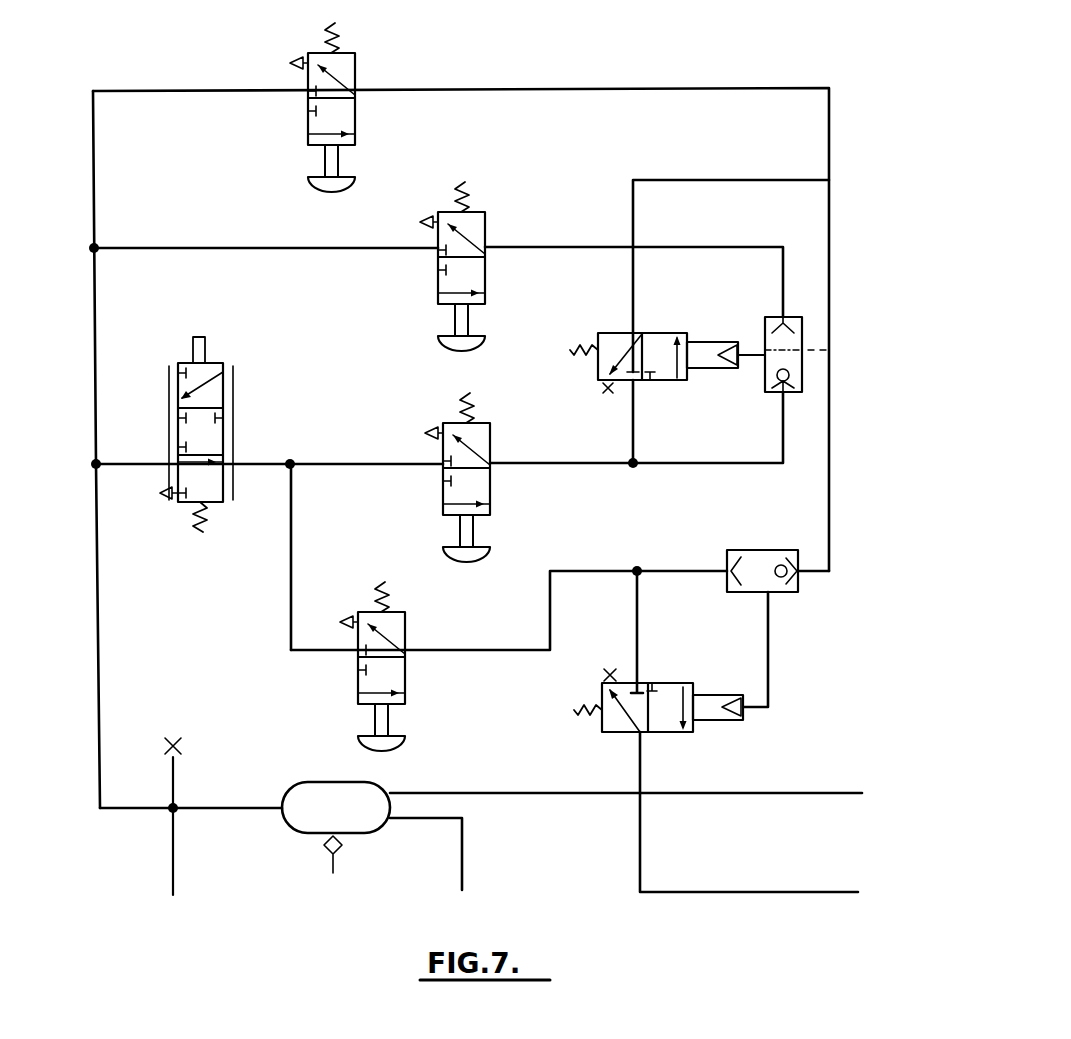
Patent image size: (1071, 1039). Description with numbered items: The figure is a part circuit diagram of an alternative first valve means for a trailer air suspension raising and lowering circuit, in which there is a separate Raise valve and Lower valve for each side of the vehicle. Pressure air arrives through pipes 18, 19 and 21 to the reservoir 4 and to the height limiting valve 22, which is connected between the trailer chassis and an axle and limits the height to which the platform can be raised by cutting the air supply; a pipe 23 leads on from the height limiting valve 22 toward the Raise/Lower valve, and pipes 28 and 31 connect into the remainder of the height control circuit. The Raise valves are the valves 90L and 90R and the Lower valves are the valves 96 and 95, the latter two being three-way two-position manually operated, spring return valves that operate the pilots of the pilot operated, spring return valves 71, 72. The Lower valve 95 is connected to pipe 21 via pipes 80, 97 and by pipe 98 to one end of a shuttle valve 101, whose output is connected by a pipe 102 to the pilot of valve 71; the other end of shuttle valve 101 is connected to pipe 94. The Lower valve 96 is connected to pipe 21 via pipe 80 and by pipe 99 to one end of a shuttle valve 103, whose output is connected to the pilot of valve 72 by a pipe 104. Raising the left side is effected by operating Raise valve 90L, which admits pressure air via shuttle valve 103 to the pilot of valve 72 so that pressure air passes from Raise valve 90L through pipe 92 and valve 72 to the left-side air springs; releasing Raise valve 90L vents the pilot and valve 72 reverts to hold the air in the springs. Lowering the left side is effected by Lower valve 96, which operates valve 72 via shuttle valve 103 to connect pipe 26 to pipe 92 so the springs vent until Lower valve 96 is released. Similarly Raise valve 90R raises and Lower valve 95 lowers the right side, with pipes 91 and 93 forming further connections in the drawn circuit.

The reservoir 4 is at (344, 820).
The pipe 18 is at (175, 862).
The pipe 19 is at (215, 808).
The pipe 21 is at (100, 645).
The height limiting valve 22 is at (218, 355).
The pipe 23 is at (258, 462).
The pipe 26 is at (720, 890).
The pipe 28 is at (725, 180).
The pipe 31 is at (460, 793).
The pilot operated spring return valve 71 is at (682, 325).
The pilot operated spring return valve 72 is at (706, 675).
The pipe 80 is at (96, 337).
The Raise valve 90L is at (348, 714).
The Raise valve 90R is at (432, 521).
The line 91 is at (292, 612).
The pipe 92 is at (470, 650).
The line 93 is at (343, 462).
The pipe 94 is at (537, 462).
The Lower valve 95 is at (430, 308).
The Lower valve 96 is at (303, 123).
The pipe 97 is at (230, 247).
The pipe 98 is at (540, 247).
The pipe 99 is at (537, 88).
The shuttle valve 101 is at (803, 376).
The pipe 102 is at (753, 357).
The shuttle valve 103 is at (753, 550).
The pipe 104 is at (768, 658).